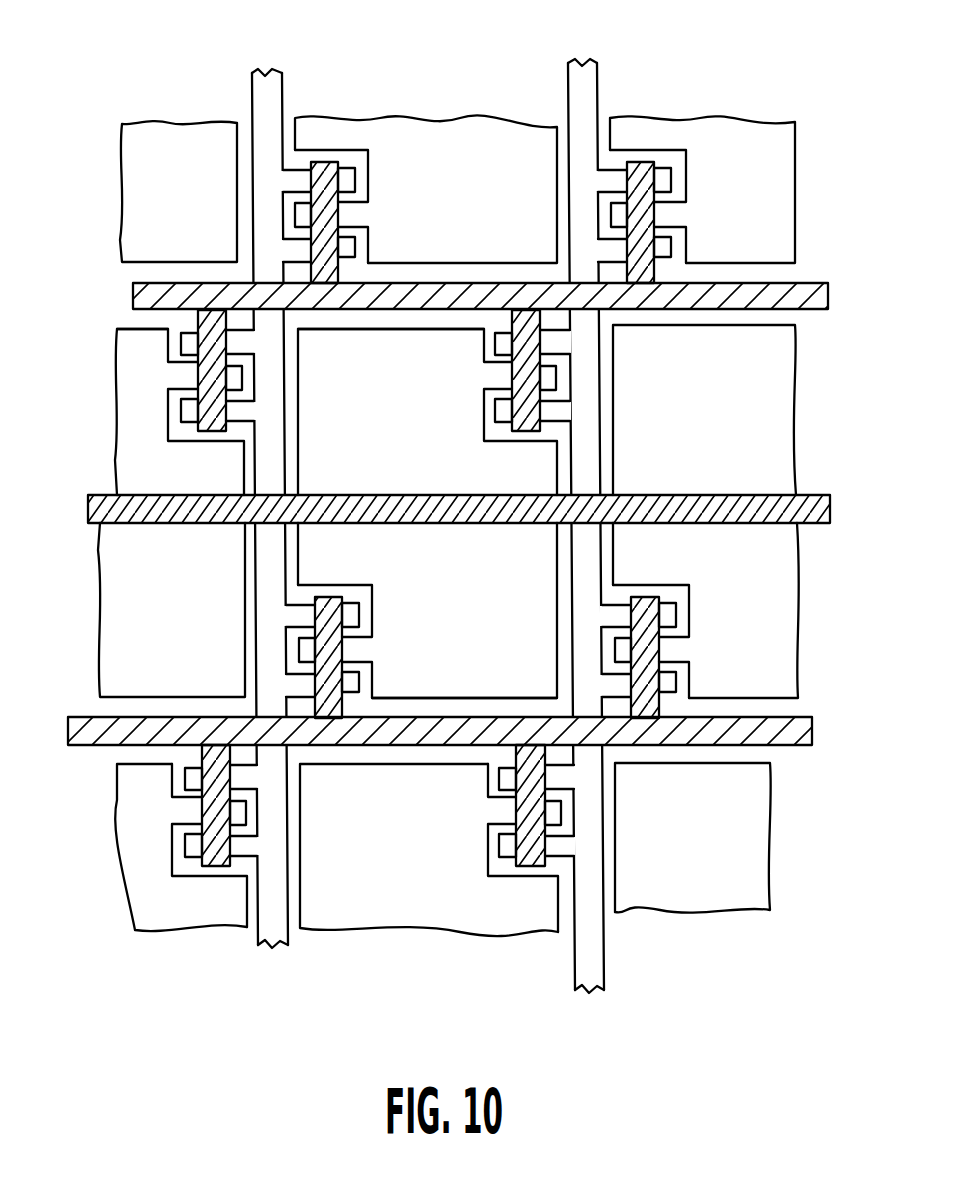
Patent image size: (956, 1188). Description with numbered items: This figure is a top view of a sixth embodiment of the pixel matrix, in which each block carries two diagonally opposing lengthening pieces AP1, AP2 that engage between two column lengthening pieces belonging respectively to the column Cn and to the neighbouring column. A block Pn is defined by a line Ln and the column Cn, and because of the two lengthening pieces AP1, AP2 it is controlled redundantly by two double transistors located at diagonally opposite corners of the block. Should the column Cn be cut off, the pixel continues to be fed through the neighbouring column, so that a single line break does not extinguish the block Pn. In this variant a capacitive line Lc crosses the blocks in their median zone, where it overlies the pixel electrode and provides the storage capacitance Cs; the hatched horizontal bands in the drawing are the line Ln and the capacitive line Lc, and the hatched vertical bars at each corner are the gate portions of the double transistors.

The column Cn is at (265, 83).
The line Ln is at (133, 292).
The storage capacitor line Lc is at (441, 478).
The lengthening piece AP1 is at (553, 382).
The lengthening piece AP2 is at (303, 646).
The storage capacitance Cs is at (537, 486).
The block Pn is at (512, 637).